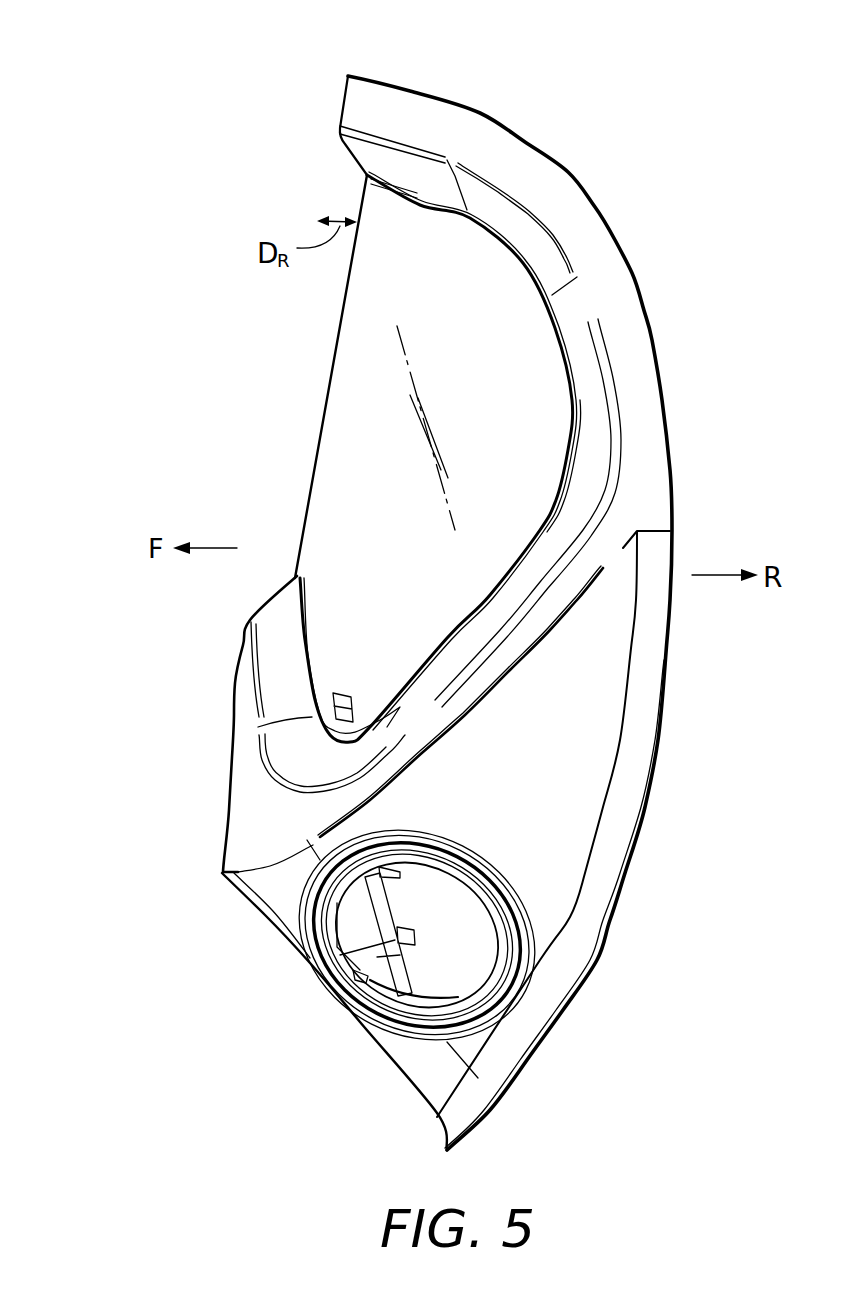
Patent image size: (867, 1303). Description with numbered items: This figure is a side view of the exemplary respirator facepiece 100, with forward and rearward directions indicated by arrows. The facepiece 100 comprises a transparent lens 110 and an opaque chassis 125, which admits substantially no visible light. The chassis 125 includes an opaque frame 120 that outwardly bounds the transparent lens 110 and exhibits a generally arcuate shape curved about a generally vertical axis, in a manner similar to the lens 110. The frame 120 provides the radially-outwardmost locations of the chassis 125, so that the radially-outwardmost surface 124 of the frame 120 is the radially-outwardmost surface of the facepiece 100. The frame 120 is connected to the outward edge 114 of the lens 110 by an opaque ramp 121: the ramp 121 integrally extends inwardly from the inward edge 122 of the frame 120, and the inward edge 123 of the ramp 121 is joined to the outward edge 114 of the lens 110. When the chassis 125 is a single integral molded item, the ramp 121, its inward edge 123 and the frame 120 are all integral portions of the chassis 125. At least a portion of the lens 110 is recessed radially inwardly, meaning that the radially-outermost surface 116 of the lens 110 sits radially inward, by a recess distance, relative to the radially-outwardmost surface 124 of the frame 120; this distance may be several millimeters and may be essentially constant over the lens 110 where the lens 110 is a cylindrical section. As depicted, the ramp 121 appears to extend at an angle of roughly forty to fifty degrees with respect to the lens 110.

The facepiece 100 is at (140, 54).
The transparent lens 110 is at (335, 445).
The outward edge 114 is at (568, 375).
The radially-outermost surface 116 is at (343, 513).
The opaque frame 120 is at (357, 93).
The opaque ramp 121 is at (523, 230).
The inward edge 122 is at (492, 187).
The inward edge 123 is at (540, 302).
The radially-outwardmost surface 124 is at (340, 112).
The chassis 125 is at (263, 826).